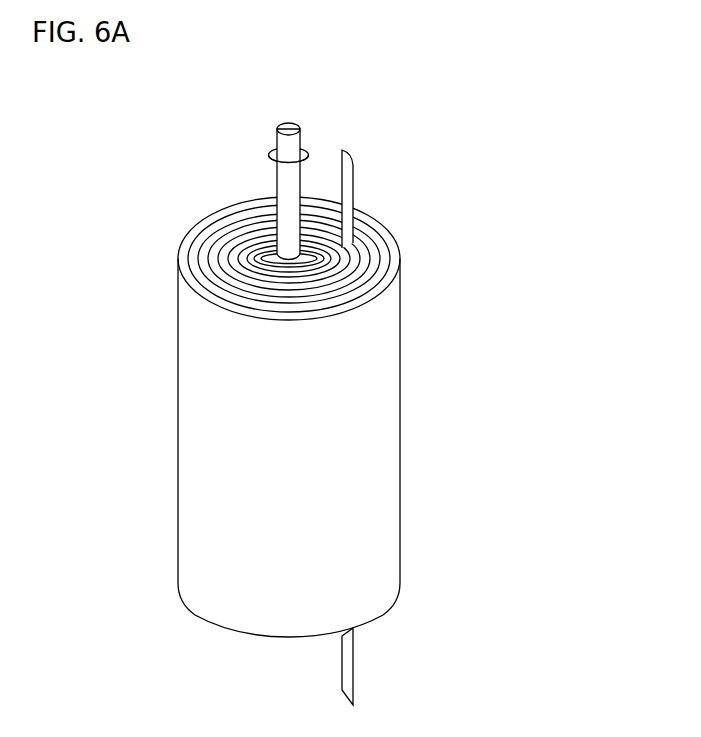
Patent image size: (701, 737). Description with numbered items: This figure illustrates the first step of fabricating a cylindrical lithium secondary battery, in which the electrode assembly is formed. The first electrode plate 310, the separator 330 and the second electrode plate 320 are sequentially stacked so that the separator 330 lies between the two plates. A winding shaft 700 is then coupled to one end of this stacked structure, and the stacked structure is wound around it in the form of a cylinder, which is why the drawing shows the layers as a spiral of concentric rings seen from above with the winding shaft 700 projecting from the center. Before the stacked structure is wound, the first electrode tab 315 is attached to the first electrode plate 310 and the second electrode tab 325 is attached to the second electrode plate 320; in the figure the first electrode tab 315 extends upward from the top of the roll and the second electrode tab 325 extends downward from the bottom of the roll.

The winding shaft 700 is at (290, 127).
The first electrode tab 315 is at (345, 173).
The first electrode plate 310 is at (393, 234).
The second electrode plate 320 is at (390, 273).
The separator 330 is at (383, 254).
The second electrode tab 325 is at (347, 658).